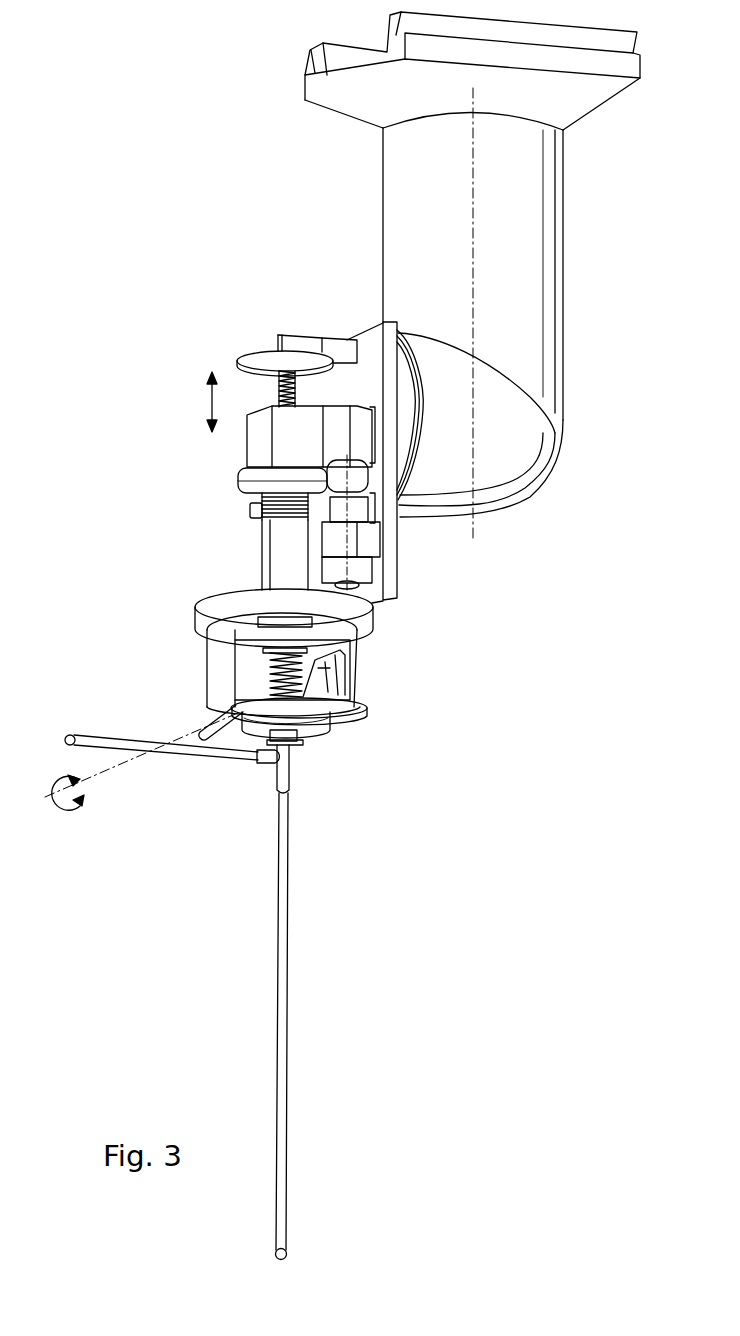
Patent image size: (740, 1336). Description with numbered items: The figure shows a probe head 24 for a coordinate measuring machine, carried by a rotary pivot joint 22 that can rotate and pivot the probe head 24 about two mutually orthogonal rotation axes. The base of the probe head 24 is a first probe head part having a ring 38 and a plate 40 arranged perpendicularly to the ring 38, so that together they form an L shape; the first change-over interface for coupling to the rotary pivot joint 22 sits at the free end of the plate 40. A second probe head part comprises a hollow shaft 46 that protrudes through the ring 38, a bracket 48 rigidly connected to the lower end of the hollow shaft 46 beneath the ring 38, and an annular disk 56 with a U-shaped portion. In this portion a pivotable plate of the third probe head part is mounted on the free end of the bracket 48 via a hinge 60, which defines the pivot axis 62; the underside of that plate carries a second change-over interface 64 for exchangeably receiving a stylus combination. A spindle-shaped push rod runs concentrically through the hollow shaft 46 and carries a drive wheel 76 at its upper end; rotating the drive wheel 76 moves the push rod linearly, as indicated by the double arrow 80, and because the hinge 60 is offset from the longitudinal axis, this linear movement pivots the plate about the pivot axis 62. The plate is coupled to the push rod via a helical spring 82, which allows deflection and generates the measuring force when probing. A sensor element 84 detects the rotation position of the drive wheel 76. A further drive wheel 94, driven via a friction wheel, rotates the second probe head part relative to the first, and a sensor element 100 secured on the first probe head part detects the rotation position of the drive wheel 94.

The rotary pivot joint 22 is at (555, 293).
The probe head 24 is at (212, 250).
The ring 38 is at (367, 613).
The plate 40 is at (393, 555).
The hollow shaft 46 is at (270, 573).
The bracket 48 is at (212, 662).
The annular disk 56 is at (357, 722).
The hinge 60 is at (215, 750).
The pivot axis 62 is at (105, 778).
The second change-over interface 64 is at (327, 760).
The drive wheel 76 is at (255, 350).
The double arrow 80 is at (210, 400).
The helical spring 82 is at (230, 683).
The sensor element 84 is at (323, 343).
The drive wheel 94 is at (242, 480).
The sensor element 100 is at (252, 508).